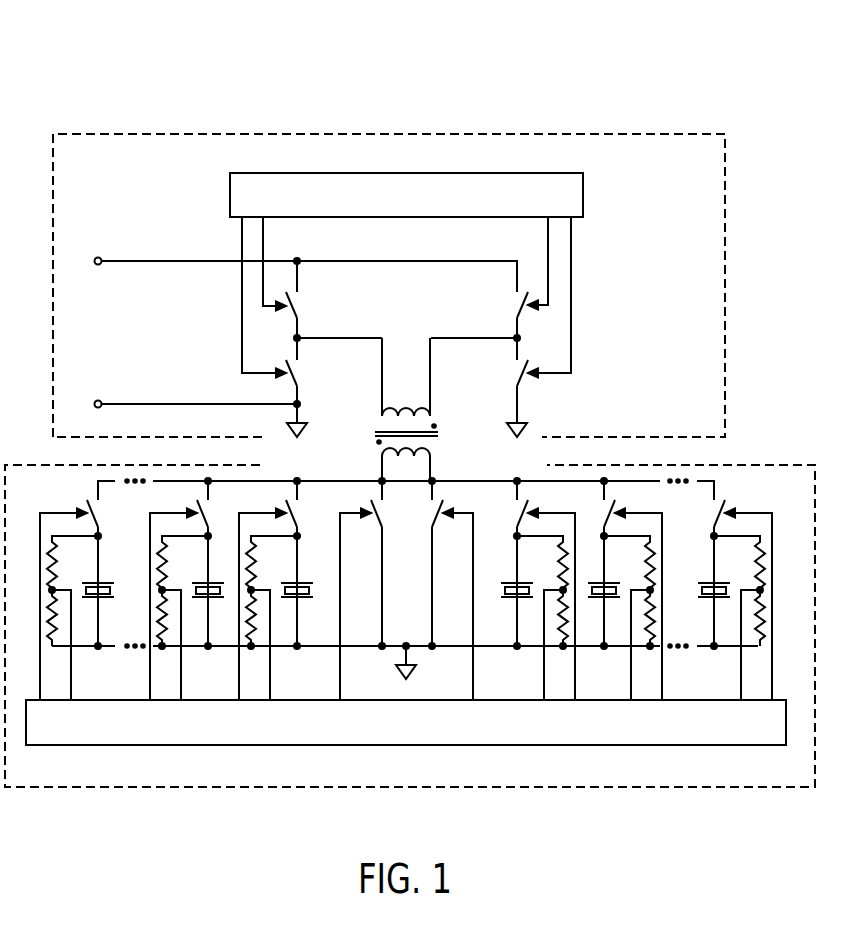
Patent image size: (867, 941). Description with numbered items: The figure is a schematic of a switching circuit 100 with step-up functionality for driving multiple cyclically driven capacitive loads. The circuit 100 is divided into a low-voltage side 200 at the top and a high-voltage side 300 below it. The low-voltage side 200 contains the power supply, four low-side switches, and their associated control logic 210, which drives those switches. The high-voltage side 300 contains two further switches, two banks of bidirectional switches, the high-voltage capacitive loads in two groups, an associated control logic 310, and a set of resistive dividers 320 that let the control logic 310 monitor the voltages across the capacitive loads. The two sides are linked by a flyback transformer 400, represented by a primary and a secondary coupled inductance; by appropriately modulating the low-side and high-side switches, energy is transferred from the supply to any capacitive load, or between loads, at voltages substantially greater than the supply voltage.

The switching circuit 100 is at (103, 68).
The low-voltage side 200 is at (686, 132).
The control logic 210 is at (503, 172).
The high-voltage side 300 is at (47, 790).
The control logic 310 is at (554, 745).
The resistive dividers 320 is at (765, 548).
The flyback transformer 400 is at (452, 439).